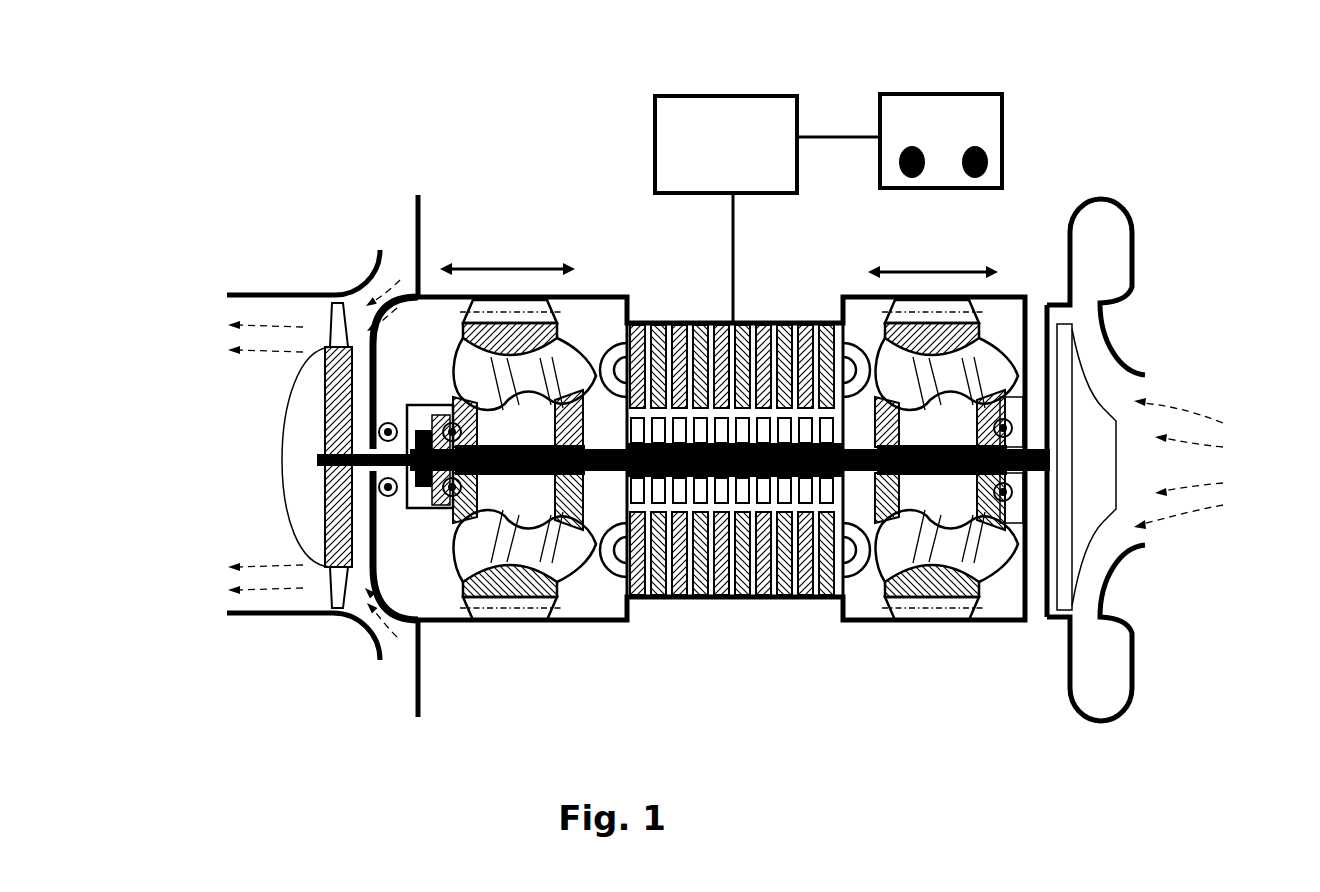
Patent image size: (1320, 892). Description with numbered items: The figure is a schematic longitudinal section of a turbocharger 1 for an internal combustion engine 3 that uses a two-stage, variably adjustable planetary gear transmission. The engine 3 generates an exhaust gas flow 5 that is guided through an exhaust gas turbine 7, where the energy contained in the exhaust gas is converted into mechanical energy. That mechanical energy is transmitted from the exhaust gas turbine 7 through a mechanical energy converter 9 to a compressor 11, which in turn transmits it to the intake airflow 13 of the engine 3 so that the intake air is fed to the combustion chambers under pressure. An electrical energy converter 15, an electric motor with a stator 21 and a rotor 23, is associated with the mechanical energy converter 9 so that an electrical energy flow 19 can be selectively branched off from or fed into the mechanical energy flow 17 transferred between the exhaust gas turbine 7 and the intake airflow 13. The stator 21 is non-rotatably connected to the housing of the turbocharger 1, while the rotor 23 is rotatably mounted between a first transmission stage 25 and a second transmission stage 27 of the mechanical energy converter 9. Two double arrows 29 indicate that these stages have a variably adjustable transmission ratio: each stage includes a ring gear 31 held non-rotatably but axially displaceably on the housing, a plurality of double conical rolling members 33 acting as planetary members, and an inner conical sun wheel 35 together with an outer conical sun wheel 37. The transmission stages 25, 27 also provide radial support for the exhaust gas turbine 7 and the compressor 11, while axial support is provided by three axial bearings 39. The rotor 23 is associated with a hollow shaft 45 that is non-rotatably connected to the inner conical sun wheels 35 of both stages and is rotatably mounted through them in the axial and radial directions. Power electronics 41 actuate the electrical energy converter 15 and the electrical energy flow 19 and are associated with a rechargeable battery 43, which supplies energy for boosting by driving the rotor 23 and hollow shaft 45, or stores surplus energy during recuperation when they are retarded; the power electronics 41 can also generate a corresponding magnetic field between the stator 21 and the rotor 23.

The turbocharger 1 is at (328, 180).
The internal combustion engine 3 is at (1178, 324).
The exhaust gas flow 5 is at (258, 502).
The exhaust gas turbine 7 is at (327, 473).
The mechanical energy converter 9 is at (524, 630).
The compressor 11 is at (1089, 520).
The intake airflow 13 is at (1263, 474).
The electrical energy converter 15 is at (666, 624).
The mechanical energy flow 17 is at (533, 444).
The electrical energy flow 19 is at (840, 135).
The stator 21 is at (737, 600).
The rotor 23 is at (767, 497).
The first transmission stage 25 is at (533, 494).
The second transmission stage 27 is at (950, 494).
The double arrows 29 is at (540, 265).
The ring gear 31 is at (473, 297).
The double conical rolling members 33 is at (576, 548).
The inner conical sun wheel 35 is at (592, 396).
The outer conical sun wheel 37 is at (456, 401).
The axial bearings 39 is at (372, 522).
The power electronics 41 is at (677, 138).
The rechargeable battery 43 is at (985, 132).
The hollow shaft 45 is at (836, 600).